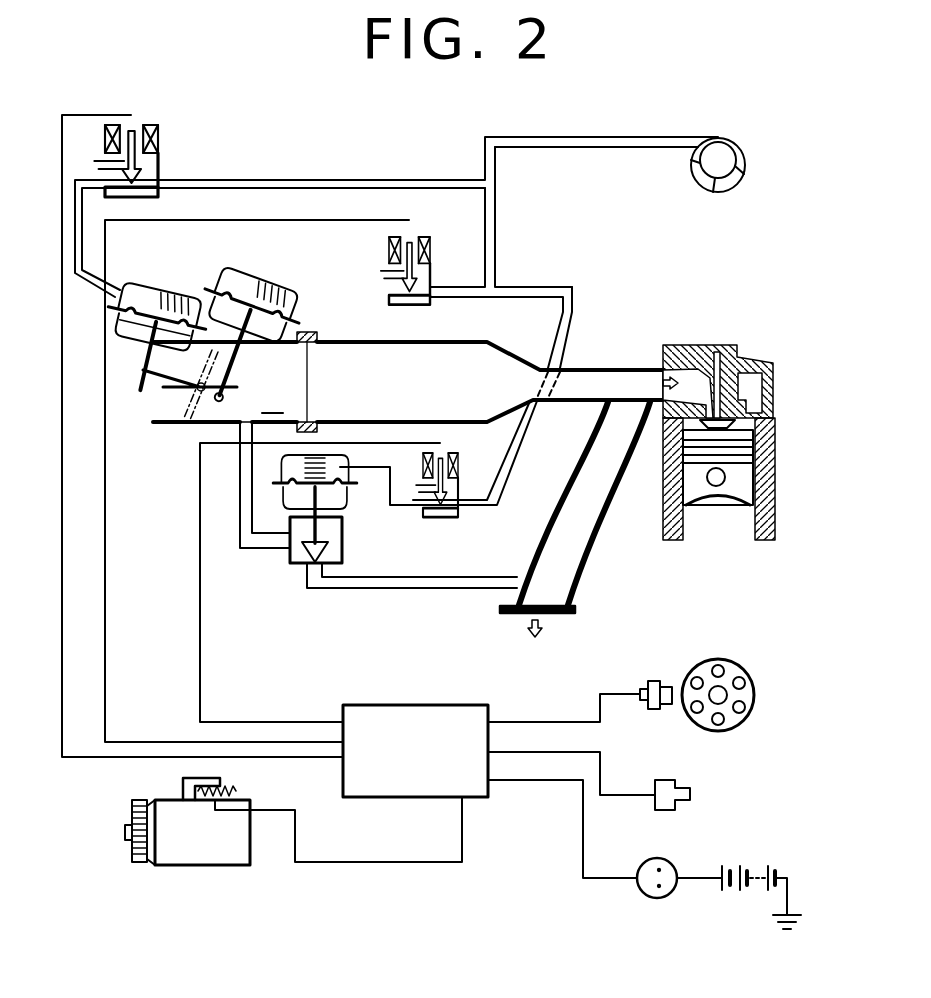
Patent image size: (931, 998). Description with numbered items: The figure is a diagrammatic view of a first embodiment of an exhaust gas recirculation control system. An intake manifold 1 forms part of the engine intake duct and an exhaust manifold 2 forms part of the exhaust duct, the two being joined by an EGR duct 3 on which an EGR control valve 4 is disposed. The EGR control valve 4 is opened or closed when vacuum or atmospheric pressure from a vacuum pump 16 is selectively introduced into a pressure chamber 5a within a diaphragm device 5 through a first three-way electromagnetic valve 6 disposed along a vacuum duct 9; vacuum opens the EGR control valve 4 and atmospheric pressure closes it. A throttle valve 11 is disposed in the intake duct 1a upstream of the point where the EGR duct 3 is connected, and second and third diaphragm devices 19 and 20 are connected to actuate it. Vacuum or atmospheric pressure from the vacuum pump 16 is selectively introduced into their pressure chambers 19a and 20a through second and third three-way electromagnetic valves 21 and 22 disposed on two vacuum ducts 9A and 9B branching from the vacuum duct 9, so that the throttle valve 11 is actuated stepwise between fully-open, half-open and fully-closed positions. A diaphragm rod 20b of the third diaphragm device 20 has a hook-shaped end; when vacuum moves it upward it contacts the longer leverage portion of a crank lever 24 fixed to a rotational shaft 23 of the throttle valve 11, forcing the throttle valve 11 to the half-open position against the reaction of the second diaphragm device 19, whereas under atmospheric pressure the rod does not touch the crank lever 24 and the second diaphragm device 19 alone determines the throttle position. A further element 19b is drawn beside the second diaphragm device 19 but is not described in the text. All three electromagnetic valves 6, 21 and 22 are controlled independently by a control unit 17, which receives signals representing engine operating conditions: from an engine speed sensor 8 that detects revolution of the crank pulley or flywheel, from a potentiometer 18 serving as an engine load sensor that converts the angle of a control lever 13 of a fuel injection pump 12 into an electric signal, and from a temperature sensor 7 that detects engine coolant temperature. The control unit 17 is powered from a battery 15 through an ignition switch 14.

The intake manifold 1 is at (490, 356).
The intake duct 1a is at (277, 401).
The exhaust manifold 2 is at (592, 470).
The EGR duct 3 is at (393, 595).
The EGR control valve 4 is at (292, 540).
The diaphragm device 5 is at (350, 494).
The pressure chamber 5a is at (290, 482).
The first three-way electromagnetic valve 6 is at (460, 482).
The temperature sensor 7 is at (690, 795).
The engine speed sensor 8 is at (660, 688).
The vacuum duct 9 is at (582, 314).
The vacuum duct 9A is at (465, 292).
The vacuum duct 9B is at (355, 183).
The throttle valve 11 is at (178, 394).
The fuel injection pump 12 is at (182, 866).
The control lever 13 is at (183, 792).
The ignition switch 14 is at (657, 898).
The battery 15 is at (738, 895).
The vacuum pump 16 is at (718, 193).
The control unit 17 is at (470, 705).
The potentiometer 18 is at (206, 800).
The second diaphragm device 19 is at (275, 290).
The pressure chamber 19a is at (236, 283).
The throttle stop 19b is at (322, 345).
The third diaphragm device 20 is at (176, 302).
The pressure chamber 20a is at (140, 300).
The diaphragm rod 20b is at (150, 362).
The second three-way electromagnetic valve 21 is at (432, 256).
The third three-way electromagnetic valve 22 is at (160, 160).
The rotational shaft 23 is at (198, 372).
The crank lever 24 is at (205, 424).